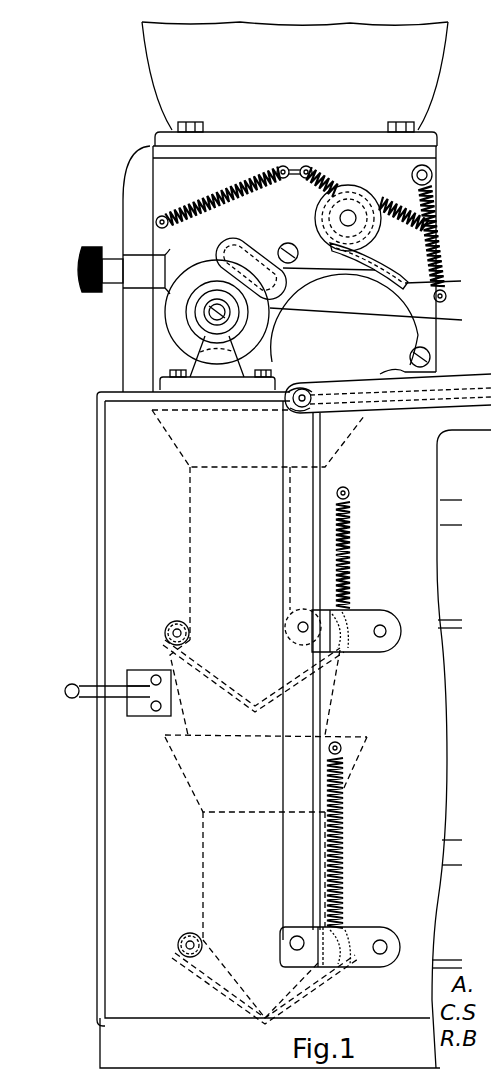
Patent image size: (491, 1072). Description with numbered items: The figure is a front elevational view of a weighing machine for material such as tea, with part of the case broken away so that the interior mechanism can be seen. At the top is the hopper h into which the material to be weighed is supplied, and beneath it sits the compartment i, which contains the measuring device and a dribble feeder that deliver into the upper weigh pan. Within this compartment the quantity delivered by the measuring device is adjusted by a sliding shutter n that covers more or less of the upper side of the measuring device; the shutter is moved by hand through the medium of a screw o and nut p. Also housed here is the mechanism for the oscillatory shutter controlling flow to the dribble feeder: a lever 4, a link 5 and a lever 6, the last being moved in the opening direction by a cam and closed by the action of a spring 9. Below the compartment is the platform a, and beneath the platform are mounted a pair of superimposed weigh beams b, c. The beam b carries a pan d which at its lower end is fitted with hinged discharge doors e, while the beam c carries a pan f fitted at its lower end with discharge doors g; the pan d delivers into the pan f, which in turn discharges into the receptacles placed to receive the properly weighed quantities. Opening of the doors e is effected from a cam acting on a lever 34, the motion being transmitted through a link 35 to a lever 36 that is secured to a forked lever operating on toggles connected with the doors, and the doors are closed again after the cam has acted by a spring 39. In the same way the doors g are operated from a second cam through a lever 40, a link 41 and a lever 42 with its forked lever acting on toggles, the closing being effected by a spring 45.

The hopper h is at (295, 76).
The compartment i is at (167, 182).
The nut p is at (338, 201).
The screw o is at (340, 218).
The sliding shutter n is at (405, 252).
The spring 9 is at (440, 248).
The lever 4 is at (215, 275).
The link 5 is at (258, 262).
The lever 6 is at (445, 315).
The lever 34 is at (304, 380).
The lever 40 is at (358, 416).
The platform a is at (124, 398).
The link 41 is at (283, 840).
The link 35 is at (321, 478).
The pan d is at (190, 552).
The hinged discharge doors e is at (236, 668).
The spring 39 is at (351, 554).
The lever 36 is at (357, 654).
The pan f is at (205, 840).
The spring 45 is at (344, 842).
The lever 42 is at (357, 968).
The discharge doors g is at (230, 980).
The weigh beam b is at (452, 515).
The weigh beam c is at (447, 858).